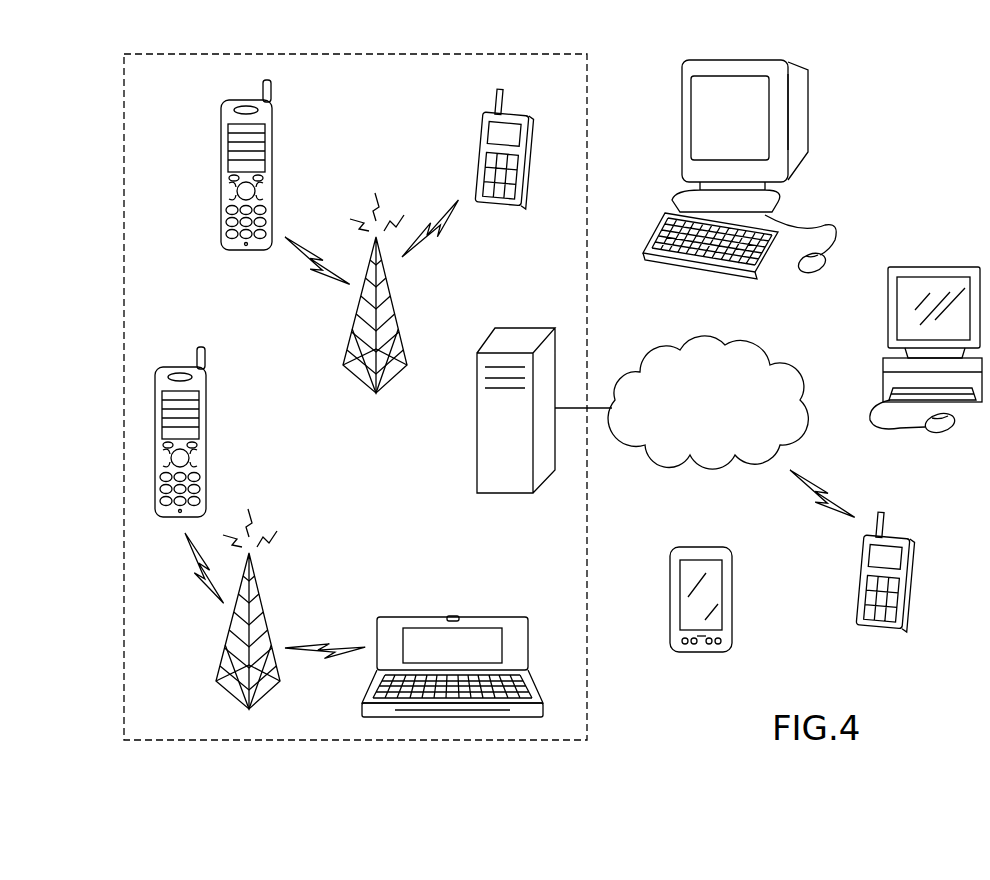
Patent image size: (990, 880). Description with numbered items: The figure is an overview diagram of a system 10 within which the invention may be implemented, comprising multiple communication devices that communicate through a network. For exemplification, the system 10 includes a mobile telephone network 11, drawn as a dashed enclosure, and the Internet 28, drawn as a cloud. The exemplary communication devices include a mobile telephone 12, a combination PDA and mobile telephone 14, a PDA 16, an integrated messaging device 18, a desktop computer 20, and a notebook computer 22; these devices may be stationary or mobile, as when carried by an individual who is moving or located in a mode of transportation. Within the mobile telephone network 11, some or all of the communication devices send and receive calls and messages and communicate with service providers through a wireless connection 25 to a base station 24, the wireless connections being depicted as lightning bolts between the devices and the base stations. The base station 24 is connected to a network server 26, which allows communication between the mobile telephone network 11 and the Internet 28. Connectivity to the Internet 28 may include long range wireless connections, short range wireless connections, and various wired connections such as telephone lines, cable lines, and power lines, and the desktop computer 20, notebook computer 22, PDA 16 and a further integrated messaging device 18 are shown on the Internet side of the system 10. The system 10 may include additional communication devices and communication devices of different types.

The system 10 is at (970, 499).
The mobile telephone network 11 is at (160, 89).
The mobile telephone 12 is at (273, 177).
The combination PDA and mobile telephone 14 is at (453, 617).
The PDA 16 is at (733, 595).
The integrated messaging device 18 is at (476, 157).
The desktop computer 20 is at (808, 107).
The notebook computer 22 is at (942, 266).
The base station 24 is at (398, 304).
The wireless connection 25 is at (201, 594).
The network server 26 is at (476, 421).
The Internet 28 is at (745, 341).